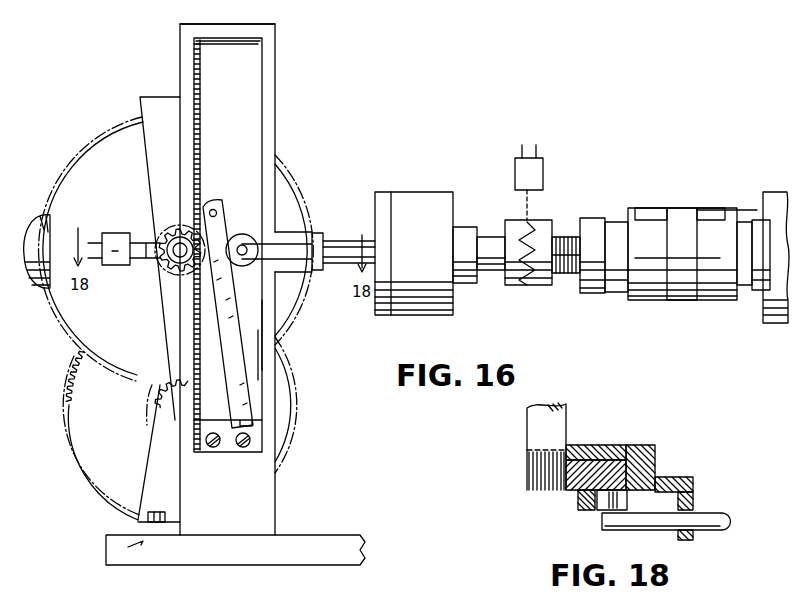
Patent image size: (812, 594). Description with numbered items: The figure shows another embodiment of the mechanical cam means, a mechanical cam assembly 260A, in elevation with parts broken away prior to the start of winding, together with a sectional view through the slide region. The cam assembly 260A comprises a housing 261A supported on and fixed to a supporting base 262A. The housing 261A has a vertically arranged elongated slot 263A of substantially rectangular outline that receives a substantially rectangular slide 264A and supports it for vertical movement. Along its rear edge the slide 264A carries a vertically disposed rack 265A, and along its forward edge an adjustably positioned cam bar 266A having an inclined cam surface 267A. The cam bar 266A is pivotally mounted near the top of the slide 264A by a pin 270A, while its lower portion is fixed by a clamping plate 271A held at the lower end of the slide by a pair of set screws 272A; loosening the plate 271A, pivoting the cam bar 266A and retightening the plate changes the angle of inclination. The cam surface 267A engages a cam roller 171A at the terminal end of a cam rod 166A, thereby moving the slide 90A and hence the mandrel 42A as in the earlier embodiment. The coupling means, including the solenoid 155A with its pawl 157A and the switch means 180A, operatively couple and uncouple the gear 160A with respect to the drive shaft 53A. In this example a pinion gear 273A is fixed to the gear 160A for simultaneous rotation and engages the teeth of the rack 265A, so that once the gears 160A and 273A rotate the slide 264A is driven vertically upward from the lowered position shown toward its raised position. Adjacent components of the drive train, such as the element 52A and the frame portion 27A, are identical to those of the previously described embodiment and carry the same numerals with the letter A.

In FIG. 16, the mechanical cam assembly 260A is at (331, 89).
In FIG. 16, the housing 261A is at (262, 515).
In FIG. 16, the supporting base 262A is at (366, 553).
In FIG. 16, the slot 263A is at (262, 110).
In FIG. 18, the slot 263A is at (597, 458).
In FIG. 16, the slide 264A is at (255, 333).
In FIG. 18, the slide 264A is at (565, 492).
In FIG. 16, the rack 265A is at (195, 430).
In FIG. 16, the cam bar 266A is at (250, 362).
In FIG. 18, the cam bar 266A is at (578, 508).
In FIG. 16, the cam surface 267A is at (242, 234).
In FIG. 16, the pin 270A is at (212, 208).
In FIG. 16, the clamping plate 271A is at (255, 433).
In FIG. 16, the set screw 272A is at (243, 448).
In FIG. 16, the pinion gear 273A is at (180, 198).
In FIG. 18, the pinion gear 273A is at (527, 476).
In FIG. 16, the solenoid 155A is at (118, 233).
In FIG. 16, the pawl 157A is at (168, 262).
In FIG. 16, the gear 160A is at (172, 292).
In FIG. 16, the cam rod 166A is at (300, 276).
In FIG. 18, the cam rod 166A is at (705, 515).
In FIG. 16, the cam roller 171A is at (247, 245).
In FIG. 18, the cam roller 171A is at (600, 510).
In FIG. 16, the drive shaft 53A is at (363, 215).
In FIG. 16, the slide 90A is at (422, 187).
In FIG. 16, the spring coupling 52A is at (488, 240).
In FIG. 16, the switch means 180A is at (545, 178).
In FIG. 16, the mandrel 42A is at (689, 192).
In FIG. 16, the frame wall 27A is at (712, 213).